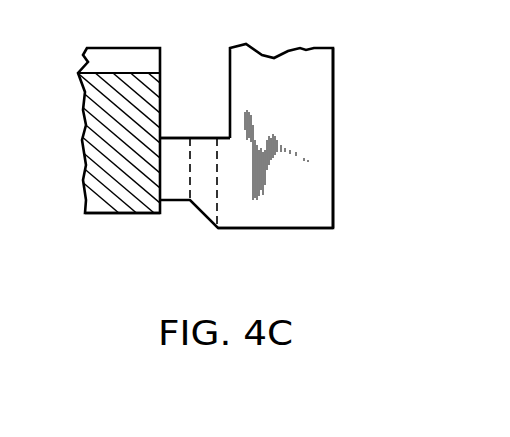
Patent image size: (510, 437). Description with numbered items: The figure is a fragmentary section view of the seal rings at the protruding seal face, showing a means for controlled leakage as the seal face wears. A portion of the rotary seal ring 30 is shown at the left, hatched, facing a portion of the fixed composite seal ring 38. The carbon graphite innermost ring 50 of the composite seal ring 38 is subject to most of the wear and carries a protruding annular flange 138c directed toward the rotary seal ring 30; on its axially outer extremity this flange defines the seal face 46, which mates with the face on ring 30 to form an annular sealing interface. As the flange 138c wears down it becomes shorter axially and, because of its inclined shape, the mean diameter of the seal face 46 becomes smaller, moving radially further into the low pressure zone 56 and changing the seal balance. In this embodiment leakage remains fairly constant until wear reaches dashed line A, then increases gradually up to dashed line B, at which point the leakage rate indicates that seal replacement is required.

The rotary seal ring 30 is at (118, 48).
The protruding annular flange 138c is at (182, 137).
The composite seal ring 38 is at (291, 44).
The seal face 46 is at (142, 212).
The radially innermost ring 50 is at (320, 168).
The low pressure zone 56 is at (284, 276).
The line A is at (190, 203).
The dashed line B is at (218, 229).